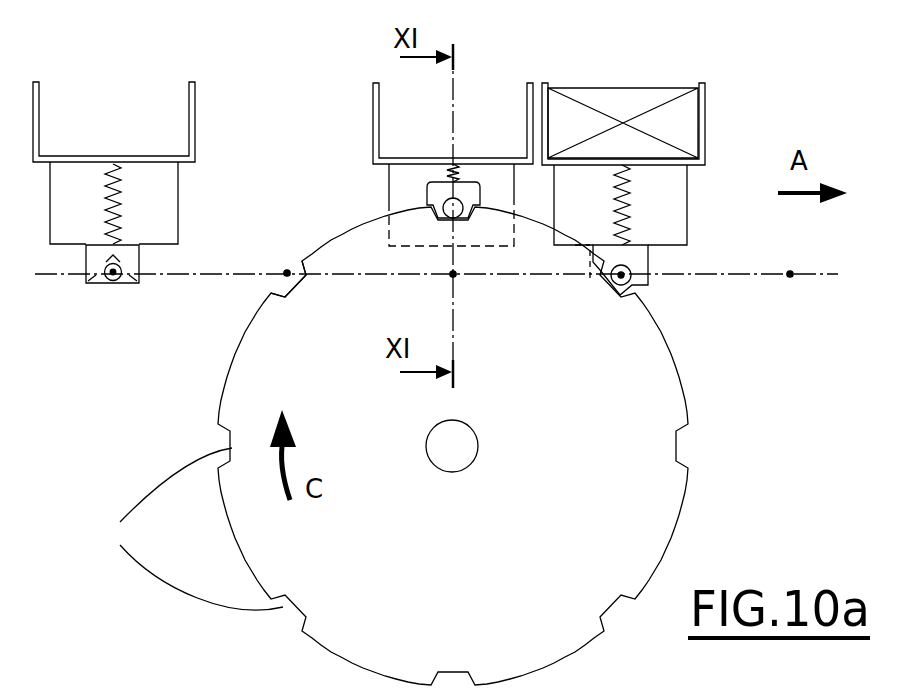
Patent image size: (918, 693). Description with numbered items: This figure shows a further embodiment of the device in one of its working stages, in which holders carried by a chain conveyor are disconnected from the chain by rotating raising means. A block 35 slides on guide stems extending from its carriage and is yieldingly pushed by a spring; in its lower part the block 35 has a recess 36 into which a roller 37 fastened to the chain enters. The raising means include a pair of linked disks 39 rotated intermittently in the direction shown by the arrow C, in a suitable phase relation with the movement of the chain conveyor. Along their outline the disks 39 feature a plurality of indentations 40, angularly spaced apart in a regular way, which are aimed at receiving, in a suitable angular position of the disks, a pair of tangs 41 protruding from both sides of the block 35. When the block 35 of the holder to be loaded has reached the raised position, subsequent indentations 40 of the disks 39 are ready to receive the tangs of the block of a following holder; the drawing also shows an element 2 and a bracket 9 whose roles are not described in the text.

The electromagnet 2 is at (633, 96).
The bracket holder 9 is at (195, 102).
The block 35 is at (125, 255).
The recess 36 is at (98, 283).
The roller 37 is at (287, 273).
The linked disks 39 is at (630, 508).
The indentations 40 is at (183, 529).
The tangs 41 is at (443, 200).